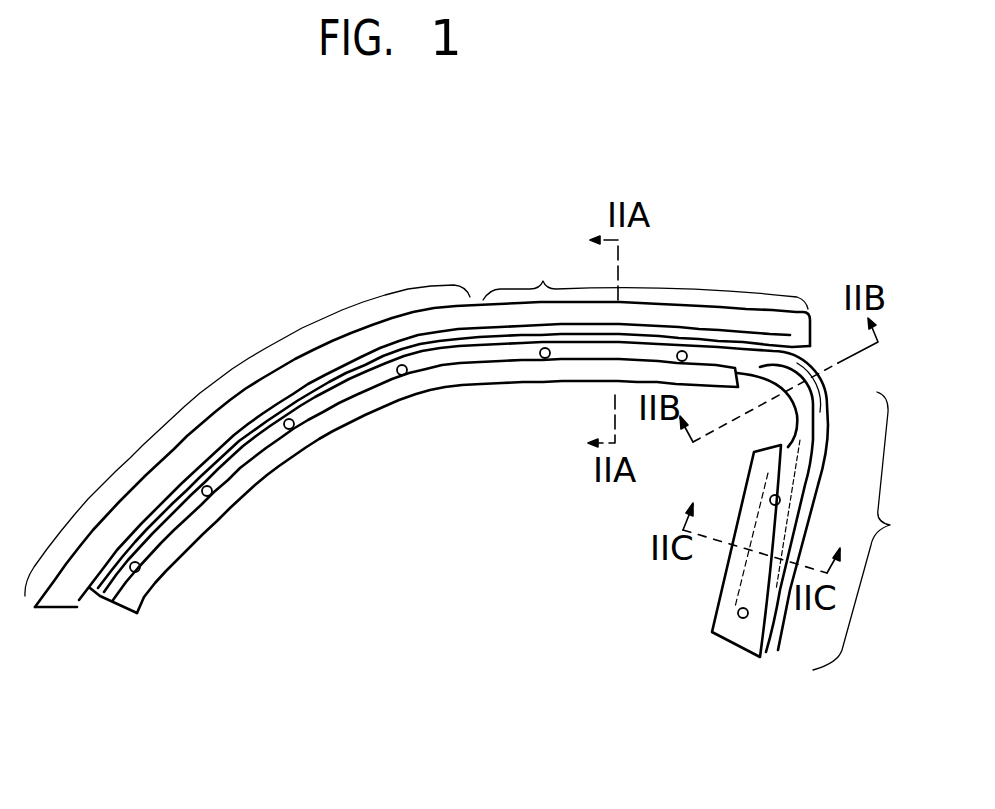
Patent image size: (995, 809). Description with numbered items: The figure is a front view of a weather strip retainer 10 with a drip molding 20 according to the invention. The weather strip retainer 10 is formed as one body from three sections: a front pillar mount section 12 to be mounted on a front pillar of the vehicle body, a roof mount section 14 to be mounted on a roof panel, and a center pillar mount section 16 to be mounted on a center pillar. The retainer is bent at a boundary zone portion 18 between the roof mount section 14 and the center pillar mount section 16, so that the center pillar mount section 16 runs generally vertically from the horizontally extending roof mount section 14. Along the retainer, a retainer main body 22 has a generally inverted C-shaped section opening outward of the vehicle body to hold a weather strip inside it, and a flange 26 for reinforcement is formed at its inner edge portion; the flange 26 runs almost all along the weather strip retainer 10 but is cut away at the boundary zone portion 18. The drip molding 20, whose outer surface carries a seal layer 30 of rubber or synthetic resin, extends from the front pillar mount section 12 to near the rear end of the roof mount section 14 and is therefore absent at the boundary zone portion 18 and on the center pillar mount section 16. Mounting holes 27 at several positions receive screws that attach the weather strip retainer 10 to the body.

The weather strip retainer 10 is at (394, 416).
The front pillar mount section 12 is at (181, 405).
The roof mount section 14 is at (645, 274).
The center pillar mount section 16 is at (867, 531).
The boundary zone portion 18 is at (819, 358).
The drip molding 20 is at (259, 383).
The retainer main body 22 is at (265, 443).
The flange 26 is at (197, 533).
The mounting holes 27 is at (540, 359).
The seal layer 30 is at (148, 487).